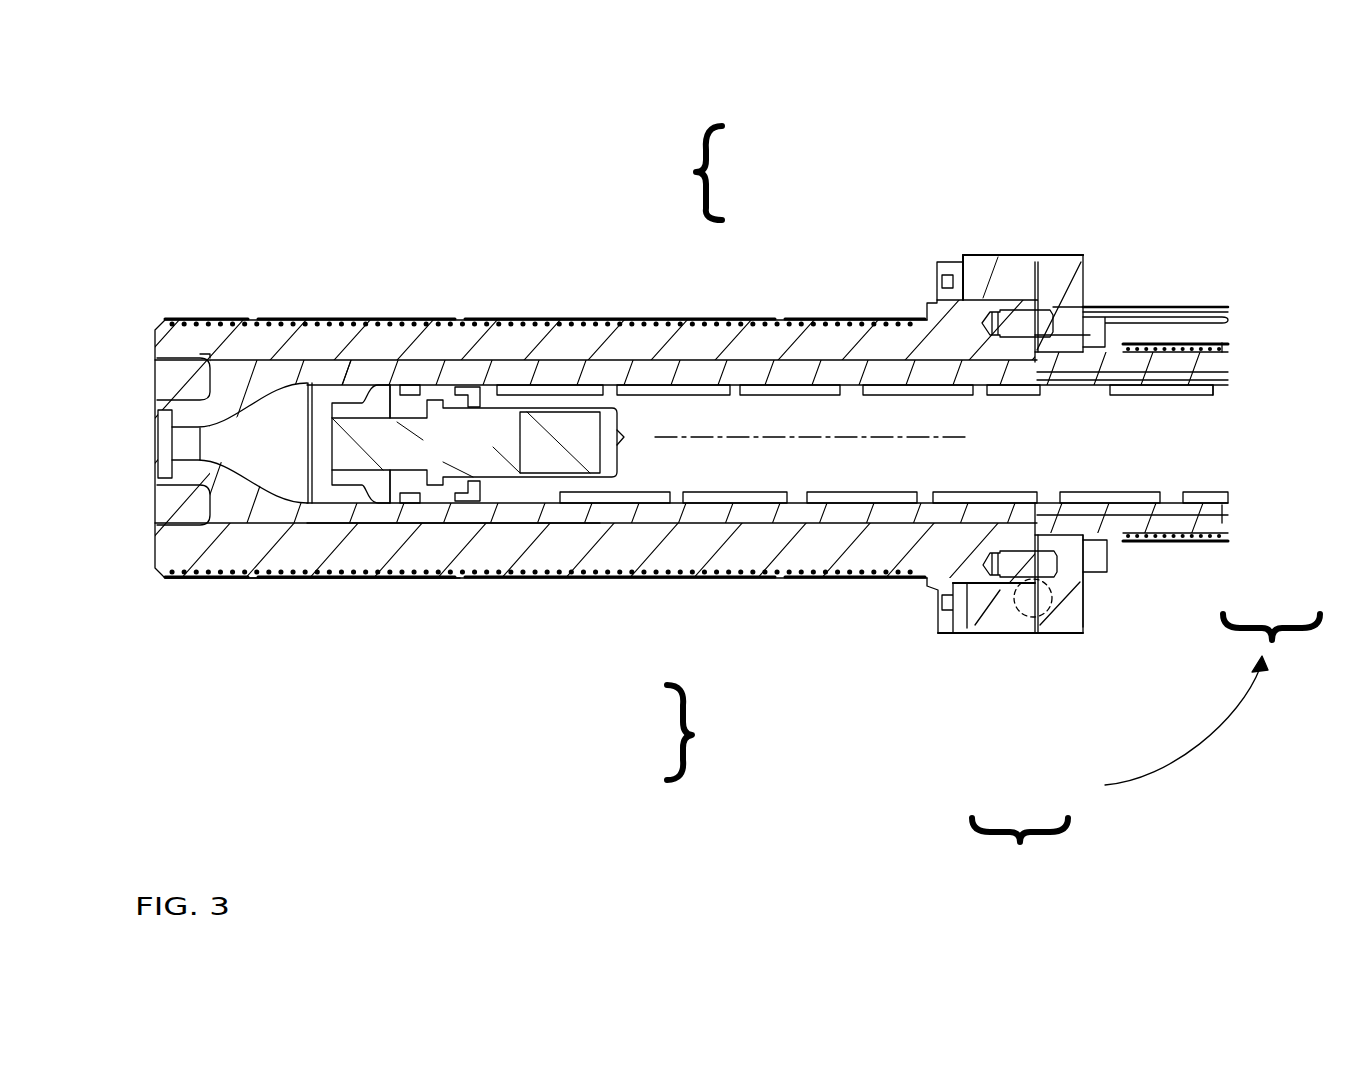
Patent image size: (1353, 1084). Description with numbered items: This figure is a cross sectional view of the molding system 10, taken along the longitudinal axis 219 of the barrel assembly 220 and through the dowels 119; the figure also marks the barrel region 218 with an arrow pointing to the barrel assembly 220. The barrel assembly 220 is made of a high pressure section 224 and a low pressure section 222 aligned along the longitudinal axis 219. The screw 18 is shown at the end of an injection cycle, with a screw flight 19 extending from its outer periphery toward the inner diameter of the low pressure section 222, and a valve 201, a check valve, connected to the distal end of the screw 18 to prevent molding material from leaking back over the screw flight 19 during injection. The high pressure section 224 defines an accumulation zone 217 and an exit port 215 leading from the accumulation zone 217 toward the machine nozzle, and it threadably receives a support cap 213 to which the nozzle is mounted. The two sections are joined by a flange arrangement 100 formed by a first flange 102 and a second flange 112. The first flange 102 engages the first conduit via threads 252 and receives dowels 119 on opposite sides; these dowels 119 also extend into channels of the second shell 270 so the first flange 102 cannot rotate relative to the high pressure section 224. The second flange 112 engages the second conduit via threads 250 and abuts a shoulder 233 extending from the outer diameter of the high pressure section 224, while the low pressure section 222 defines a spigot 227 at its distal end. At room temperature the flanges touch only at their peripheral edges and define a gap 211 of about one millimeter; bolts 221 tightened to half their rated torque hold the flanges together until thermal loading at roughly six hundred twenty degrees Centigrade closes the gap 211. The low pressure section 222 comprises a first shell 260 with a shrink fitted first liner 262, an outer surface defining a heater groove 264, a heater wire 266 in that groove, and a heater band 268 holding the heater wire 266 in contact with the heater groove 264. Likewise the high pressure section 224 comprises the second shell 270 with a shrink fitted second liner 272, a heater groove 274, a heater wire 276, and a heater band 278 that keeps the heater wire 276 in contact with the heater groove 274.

The molding system 10 is at (1220, 132).
The screw 18 is at (1068, 455).
The screw flight 19 is at (1115, 375).
The housing assembly 100 is at (677, 173).
The first flange 102 is at (1000, 255).
The second flange 112 is at (958, 272).
The dowels 119 is at (1020, 322).
The valve 201 is at (477, 455).
The gap 211 is at (1022, 602).
The support cap 213 is at (200, 517).
The exit port 215 is at (160, 437).
The accumulation zone 217 is at (245, 437).
The mounting assembly 218 is at (985, 868).
The longitudinal axis 219 is at (663, 437).
The barrel assembly 220 is at (1020, 850).
The bolts 221 is at (1090, 335).
The low pressure section 222 is at (1023, 528).
The high pressure section 224 is at (712, 743).
The spigot 227 is at (1072, 355).
The shoulder 233 is at (930, 592).
The threads 250 is at (982, 298).
The threads 252 is at (1050, 275).
The first shell 260 is at (1222, 530).
The first liner 262 is at (1222, 512).
The heater groove 264 is at (1222, 352).
The heater wire 266 is at (1213, 393).
The heater band 268 is at (1170, 340).
The second shell 270 is at (430, 512).
The second liner 272 is at (483, 553).
The heater groove 274 is at (170, 563).
The heater wire 276 is at (263, 563).
The heater band 278 is at (393, 570).